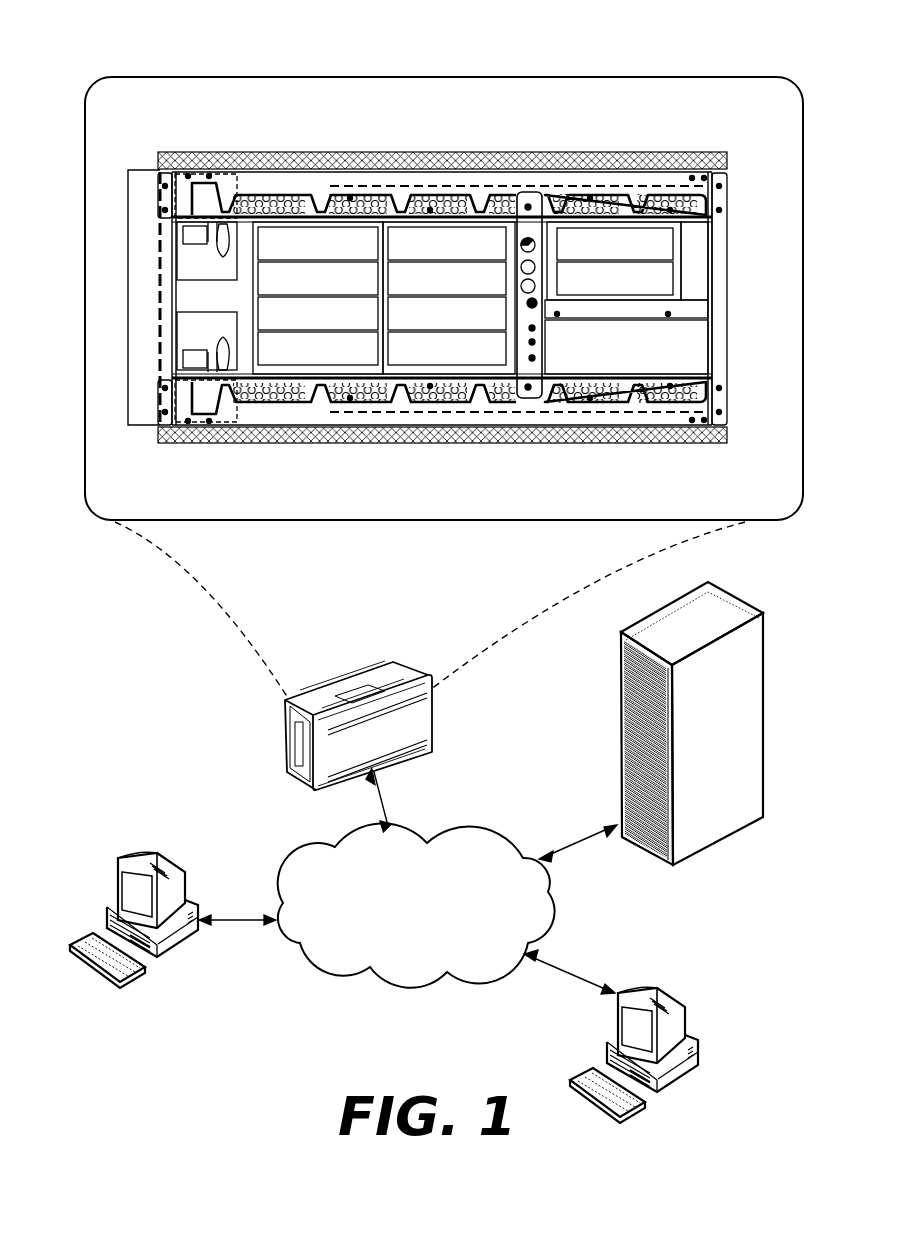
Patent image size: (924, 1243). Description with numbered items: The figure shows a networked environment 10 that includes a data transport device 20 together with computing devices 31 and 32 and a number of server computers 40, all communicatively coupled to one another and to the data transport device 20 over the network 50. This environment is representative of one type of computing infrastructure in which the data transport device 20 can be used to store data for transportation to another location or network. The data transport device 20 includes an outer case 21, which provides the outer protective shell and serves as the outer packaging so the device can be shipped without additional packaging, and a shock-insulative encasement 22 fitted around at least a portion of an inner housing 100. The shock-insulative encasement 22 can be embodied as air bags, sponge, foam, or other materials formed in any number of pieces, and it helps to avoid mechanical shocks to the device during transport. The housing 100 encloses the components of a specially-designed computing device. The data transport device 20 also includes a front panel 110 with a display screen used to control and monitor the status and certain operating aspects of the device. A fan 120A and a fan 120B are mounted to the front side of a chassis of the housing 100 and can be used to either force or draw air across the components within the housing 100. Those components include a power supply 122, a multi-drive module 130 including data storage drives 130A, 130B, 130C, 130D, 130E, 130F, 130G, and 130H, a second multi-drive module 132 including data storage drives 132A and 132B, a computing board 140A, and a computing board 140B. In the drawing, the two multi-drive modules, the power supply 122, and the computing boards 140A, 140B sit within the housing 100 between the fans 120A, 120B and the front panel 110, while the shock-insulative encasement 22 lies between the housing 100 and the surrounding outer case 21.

The networked environment 10 is at (88, 37).
The outer case 21 is at (697, 88).
The shock-insulative encasement 22 is at (680, 158).
The inner housing 100 is at (731, 178).
The front panel 110 is at (145, 417).
The fan 120A is at (189, 260).
The fan 120B is at (188, 325).
The multi-drive module 130 is at (357, 298).
The data storage drive 130A is at (318, 243).
The data storage drive 130B is at (318, 278).
The data storage drive 130C is at (318, 313).
The data storage drive 130D is at (318, 348).
The data storage drive 130E is at (447, 243).
The data storage drive 130F is at (447, 278).
The data storage drive 130G is at (447, 313).
The data storage drive 130H is at (447, 348).
The multi-drive module 132 is at (642, 261).
The data storage drive 132A is at (615, 244).
The data storage drive 132B is at (615, 278).
The power supply 122 is at (626, 337).
The computing board 140A is at (708, 196).
The computing board 140B is at (708, 386).
The data transport device 20 is at (428, 727).
The server computer 40 is at (730, 604).
The computing device 31 is at (123, 857).
The computing device 32 is at (678, 1017).
The network 50 is at (416, 905).